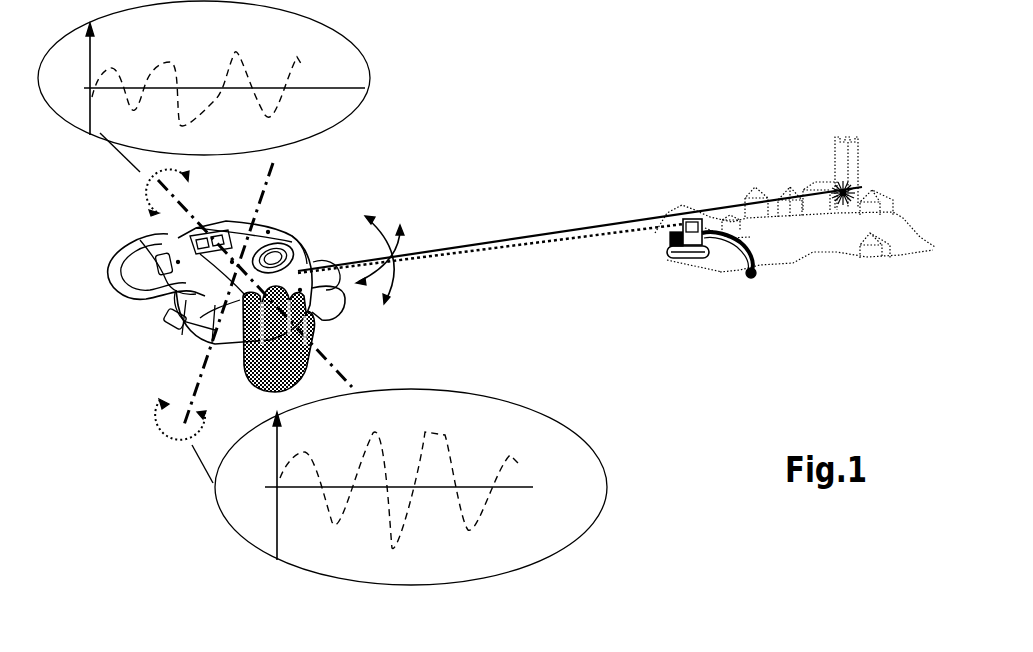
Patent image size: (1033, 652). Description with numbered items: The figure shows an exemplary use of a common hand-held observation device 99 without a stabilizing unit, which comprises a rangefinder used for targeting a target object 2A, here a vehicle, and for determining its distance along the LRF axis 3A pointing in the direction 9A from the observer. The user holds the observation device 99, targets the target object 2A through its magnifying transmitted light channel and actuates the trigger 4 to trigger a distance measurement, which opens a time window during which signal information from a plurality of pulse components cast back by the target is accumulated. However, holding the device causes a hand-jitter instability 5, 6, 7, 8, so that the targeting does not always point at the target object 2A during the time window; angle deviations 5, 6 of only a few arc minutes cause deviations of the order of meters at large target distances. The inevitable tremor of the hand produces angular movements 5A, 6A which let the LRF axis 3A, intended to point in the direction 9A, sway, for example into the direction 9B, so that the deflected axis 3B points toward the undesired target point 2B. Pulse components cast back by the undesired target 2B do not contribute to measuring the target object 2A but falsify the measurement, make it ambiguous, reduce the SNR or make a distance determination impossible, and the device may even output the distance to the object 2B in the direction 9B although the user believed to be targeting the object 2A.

The observation device 99 is at (199, 281).
The trigger 4 is at (258, 282).
The hand-jitter instability (angle deviation) 5 is at (227, 76).
The hand-jitter instability (angle deviation) 6 is at (453, 477).
The hand-jitter instability 7 is at (342, 350).
The hand-jitter instability 8 is at (275, 204).
The angular movement 5A is at (400, 270).
The angular movement 6A is at (404, 245).
The LRF axis 3A is at (490, 274).
The direction 9A is at (583, 240).
The swayed LRF axis 3B is at (580, 201).
The direction 9B is at (580, 230).
The target object 2A is at (684, 216).
The target point (undesired target) 2B is at (863, 187).